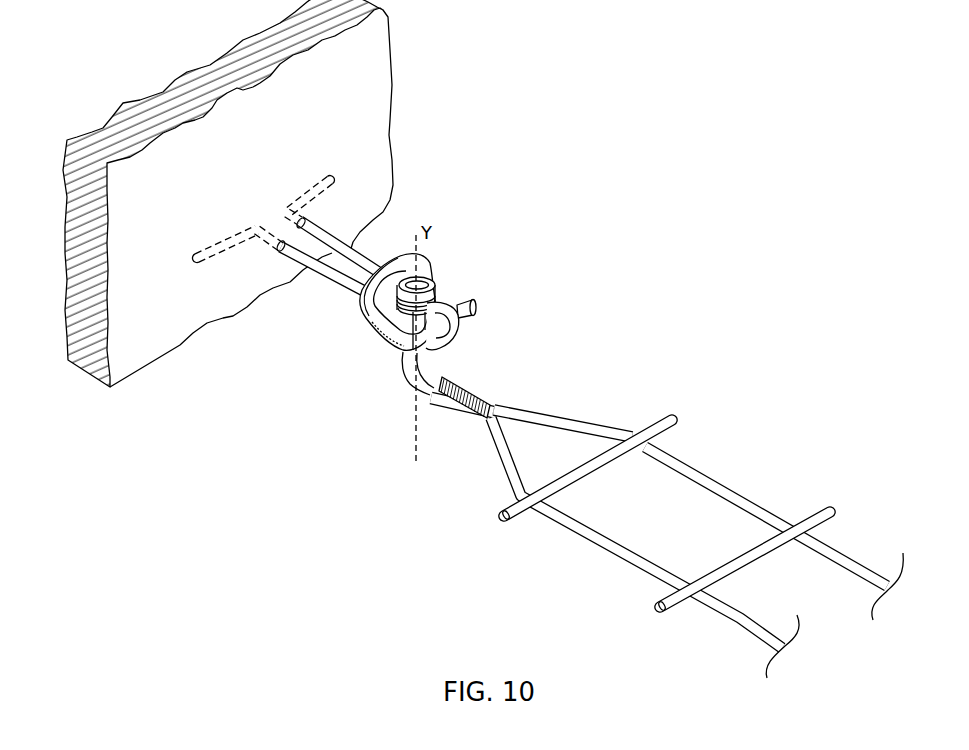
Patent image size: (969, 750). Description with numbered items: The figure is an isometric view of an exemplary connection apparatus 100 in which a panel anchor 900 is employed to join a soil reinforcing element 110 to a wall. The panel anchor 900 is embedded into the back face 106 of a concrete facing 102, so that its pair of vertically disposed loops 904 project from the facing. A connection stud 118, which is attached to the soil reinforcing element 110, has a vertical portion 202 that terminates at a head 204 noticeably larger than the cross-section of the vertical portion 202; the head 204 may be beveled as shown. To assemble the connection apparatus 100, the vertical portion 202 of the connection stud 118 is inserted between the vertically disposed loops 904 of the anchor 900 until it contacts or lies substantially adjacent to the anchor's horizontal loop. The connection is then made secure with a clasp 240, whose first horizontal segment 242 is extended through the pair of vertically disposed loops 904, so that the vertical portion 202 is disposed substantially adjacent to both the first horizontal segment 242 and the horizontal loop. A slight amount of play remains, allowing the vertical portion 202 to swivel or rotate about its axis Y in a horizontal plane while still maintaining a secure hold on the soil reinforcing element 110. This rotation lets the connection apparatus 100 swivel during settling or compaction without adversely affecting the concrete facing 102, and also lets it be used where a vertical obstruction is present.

The concrete facing 102 is at (383, 137).
The back face 106 is at (250, 177).
The panel anchor 900 is at (355, 263).
The connection apparatus 100 is at (459, 349).
The clasp 240 is at (375, 330).
The head 204 is at (438, 299).
The first horizontal segment 242 is at (474, 312).
The vertically disposed loops 904 is at (457, 357).
The vertical portion 202 is at (408, 368).
The connection stud 118 is at (477, 396).
The soil reinforcing element 110 is at (713, 481).